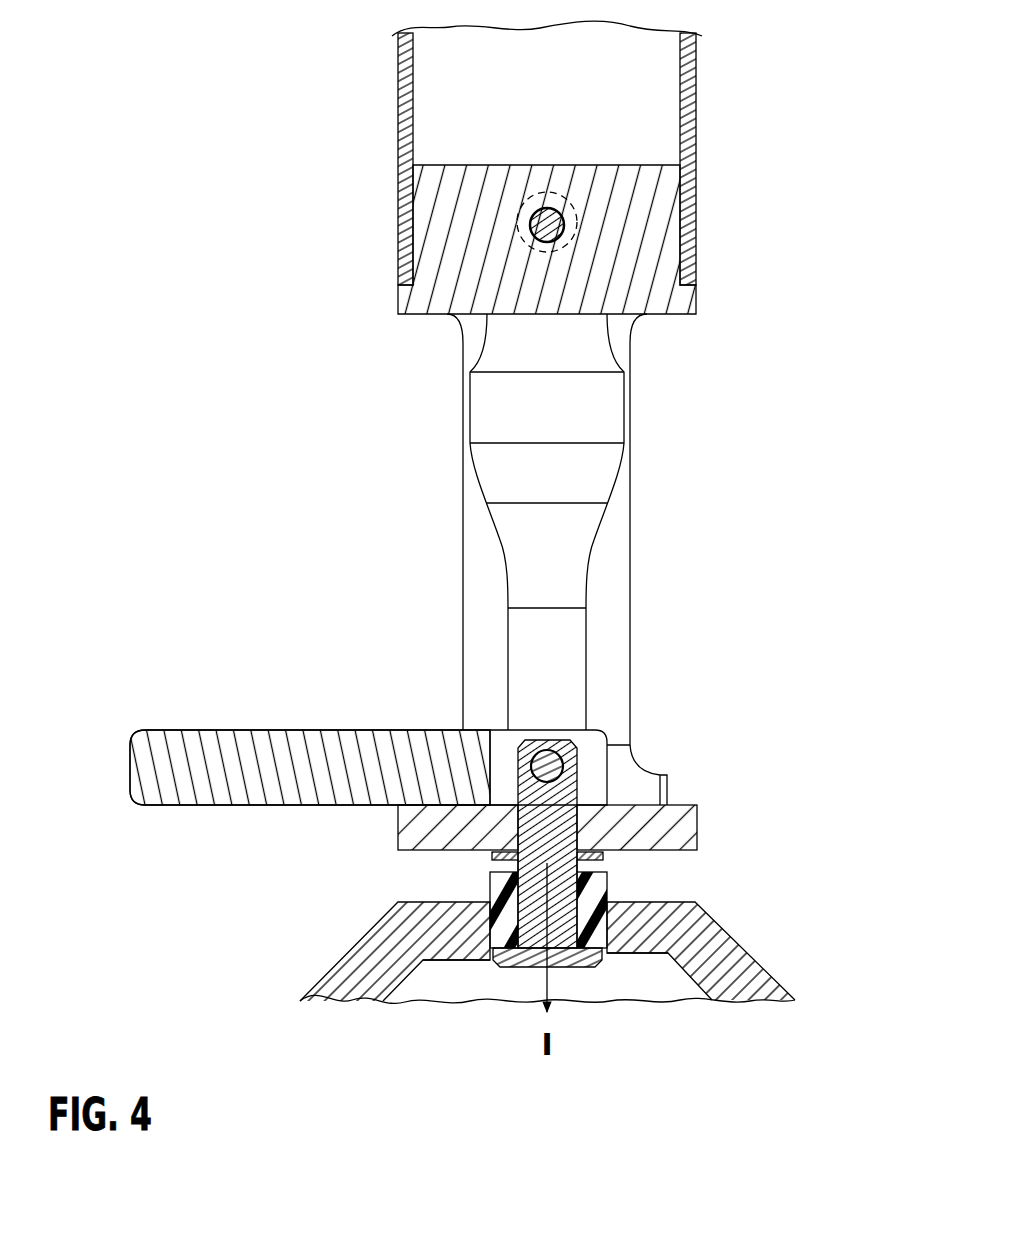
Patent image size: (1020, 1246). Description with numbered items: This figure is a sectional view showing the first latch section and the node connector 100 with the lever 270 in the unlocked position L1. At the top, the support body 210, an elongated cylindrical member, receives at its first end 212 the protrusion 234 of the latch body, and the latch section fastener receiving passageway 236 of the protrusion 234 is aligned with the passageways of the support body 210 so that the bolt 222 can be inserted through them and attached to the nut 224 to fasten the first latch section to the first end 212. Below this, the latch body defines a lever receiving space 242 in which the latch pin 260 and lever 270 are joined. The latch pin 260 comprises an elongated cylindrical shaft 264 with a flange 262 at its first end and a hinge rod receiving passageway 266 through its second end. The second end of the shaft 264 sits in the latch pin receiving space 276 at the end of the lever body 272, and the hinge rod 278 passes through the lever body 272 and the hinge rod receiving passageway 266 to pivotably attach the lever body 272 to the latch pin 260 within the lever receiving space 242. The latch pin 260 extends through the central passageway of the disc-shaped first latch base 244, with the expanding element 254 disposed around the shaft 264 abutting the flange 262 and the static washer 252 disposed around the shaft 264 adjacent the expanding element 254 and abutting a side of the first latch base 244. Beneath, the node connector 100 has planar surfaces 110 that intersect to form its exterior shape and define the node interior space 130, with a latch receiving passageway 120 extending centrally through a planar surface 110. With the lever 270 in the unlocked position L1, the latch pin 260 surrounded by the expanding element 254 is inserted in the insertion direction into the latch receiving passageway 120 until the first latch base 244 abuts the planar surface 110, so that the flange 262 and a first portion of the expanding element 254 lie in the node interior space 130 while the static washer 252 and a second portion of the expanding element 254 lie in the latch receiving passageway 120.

The node connector 100 is at (552, 975).
The planar surfaces 110 is at (413, 902).
The latch receiving passageways 120 is at (637, 955).
The node interior space 130 is at (438, 994).
The support body 210 is at (549, 153).
The first end 212 is at (602, 197).
The bolt 222 is at (540, 212).
The nut 224 is at (575, 197).
The protrusion 234 is at (413, 207).
The latch section fastener receiving passageway 236 is at (565, 225).
The lever receiving space 242 is at (613, 559).
The first latch base 244 is at (693, 822).
The static washer 252 is at (605, 857).
The expanding element 254 is at (609, 895).
The latch pin 260 is at (542, 909).
The flange 262 is at (513, 967).
The shaft 264 is at (493, 865).
The hinge rod receiving passageway 266 is at (565, 780).
The lever 270 is at (442, 748).
The lever body 272 is at (203, 790).
The latch pin receiving space 276 is at (607, 735).
The hinge rod 278 is at (562, 762).
The unlocked position L1 is at (198, 710).